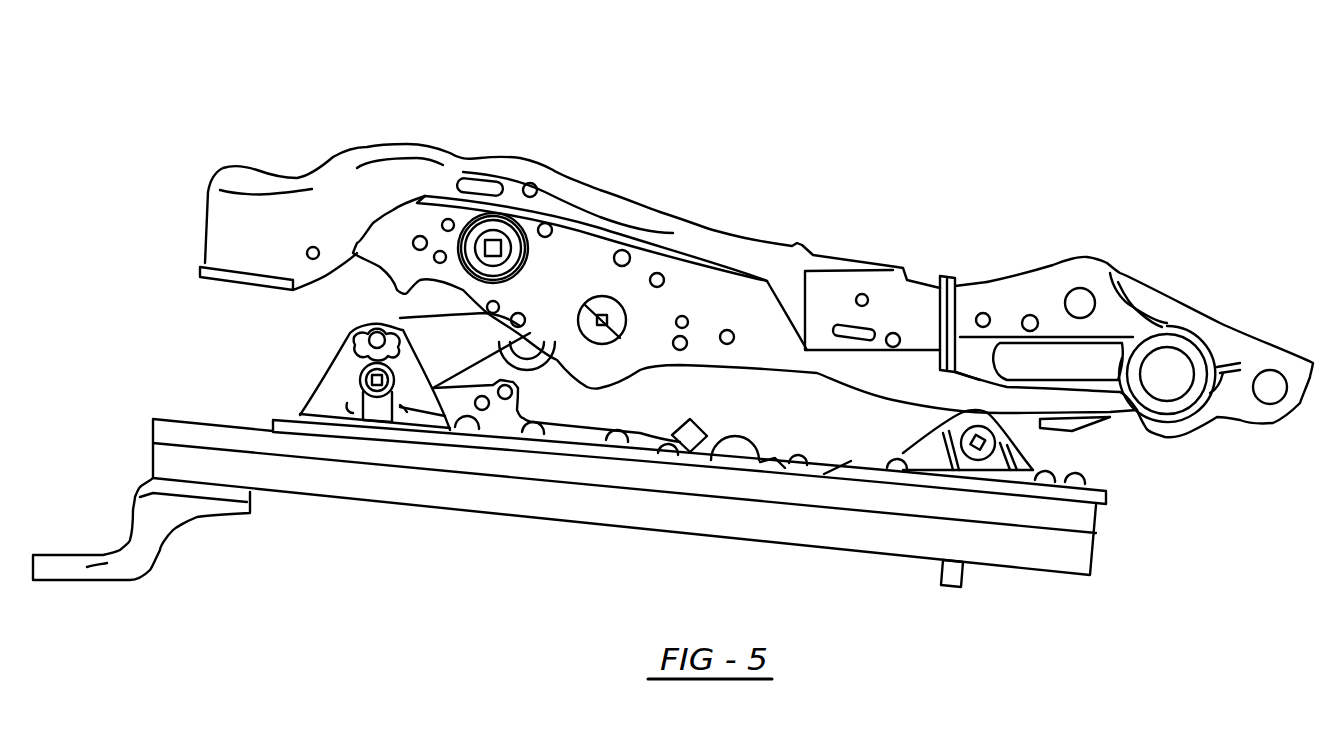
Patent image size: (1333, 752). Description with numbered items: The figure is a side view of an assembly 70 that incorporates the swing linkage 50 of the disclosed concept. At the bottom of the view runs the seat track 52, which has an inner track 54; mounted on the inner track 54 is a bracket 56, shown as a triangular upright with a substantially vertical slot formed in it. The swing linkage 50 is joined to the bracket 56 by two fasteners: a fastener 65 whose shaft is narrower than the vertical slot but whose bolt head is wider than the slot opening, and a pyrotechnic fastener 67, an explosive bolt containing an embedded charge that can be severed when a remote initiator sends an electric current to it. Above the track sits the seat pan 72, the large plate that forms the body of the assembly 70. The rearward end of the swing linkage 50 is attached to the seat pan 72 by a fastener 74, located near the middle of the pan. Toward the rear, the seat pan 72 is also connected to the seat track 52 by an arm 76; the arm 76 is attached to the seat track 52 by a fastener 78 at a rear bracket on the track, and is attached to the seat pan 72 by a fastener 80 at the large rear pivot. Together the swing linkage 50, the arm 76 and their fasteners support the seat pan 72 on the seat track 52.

The swing linkage 50 is at (430, 332).
The seat track 52 is at (516, 503).
The inner track 54 is at (364, 434).
The bracket 56 is at (418, 404).
The fastener 65 is at (365, 380).
The pyrotechnic fastener 67 is at (372, 339).
The assembly 70 is at (362, 133).
The seat pan 72 is at (717, 242).
The fastener 74 is at (605, 318).
The arm 76 is at (1040, 427).
The fastener 78 is at (980, 450).
The fastener 80 is at (1168, 370).